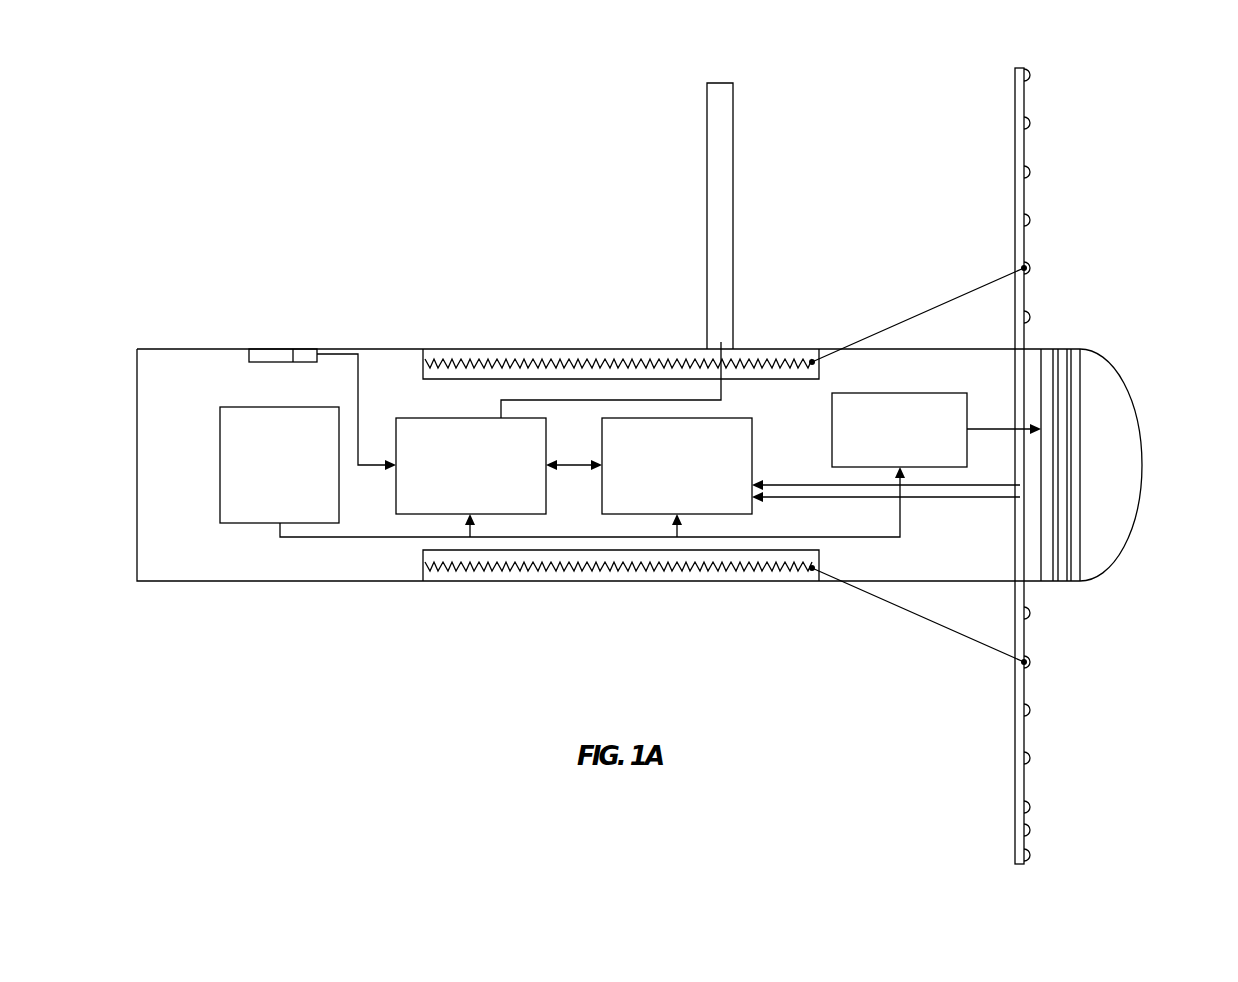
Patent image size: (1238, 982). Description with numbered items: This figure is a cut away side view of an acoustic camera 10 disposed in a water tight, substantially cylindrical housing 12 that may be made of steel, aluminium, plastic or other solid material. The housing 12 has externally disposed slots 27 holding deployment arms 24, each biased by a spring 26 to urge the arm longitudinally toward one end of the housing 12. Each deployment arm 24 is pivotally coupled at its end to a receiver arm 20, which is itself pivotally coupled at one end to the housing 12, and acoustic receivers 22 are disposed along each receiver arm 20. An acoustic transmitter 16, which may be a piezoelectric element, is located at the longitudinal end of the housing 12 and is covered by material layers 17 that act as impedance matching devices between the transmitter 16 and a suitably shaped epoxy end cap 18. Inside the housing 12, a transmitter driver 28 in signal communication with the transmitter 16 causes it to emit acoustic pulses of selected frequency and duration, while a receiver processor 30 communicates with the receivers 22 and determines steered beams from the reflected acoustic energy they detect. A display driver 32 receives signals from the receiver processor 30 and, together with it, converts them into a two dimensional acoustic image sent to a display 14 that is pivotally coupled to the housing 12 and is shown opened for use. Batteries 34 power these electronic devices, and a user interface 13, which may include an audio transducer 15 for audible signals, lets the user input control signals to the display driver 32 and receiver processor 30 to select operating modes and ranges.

The camera 10 is at (204, 150).
The housing 12 is at (220, 349).
The user interface 13 is at (272, 349).
The display 14 is at (733, 162).
The audio transducer 15 is at (304, 349).
The acoustic transmitter 16 is at (1055, 358).
The material layers 17 is at (1068, 393).
The end cap 18 is at (1118, 418).
The receiver arm 20 is at (1015, 152).
The acoustic receivers 22 is at (1030, 75).
The deployment arm 24 is at (918, 310).
The spring 26 is at (527, 358).
The slot 27 is at (572, 356).
The transmitter driver 28 is at (940, 405).
The receiver processor 30 is at (612, 500).
The display driver 32 is at (433, 418).
The batteries 34 is at (233, 407).